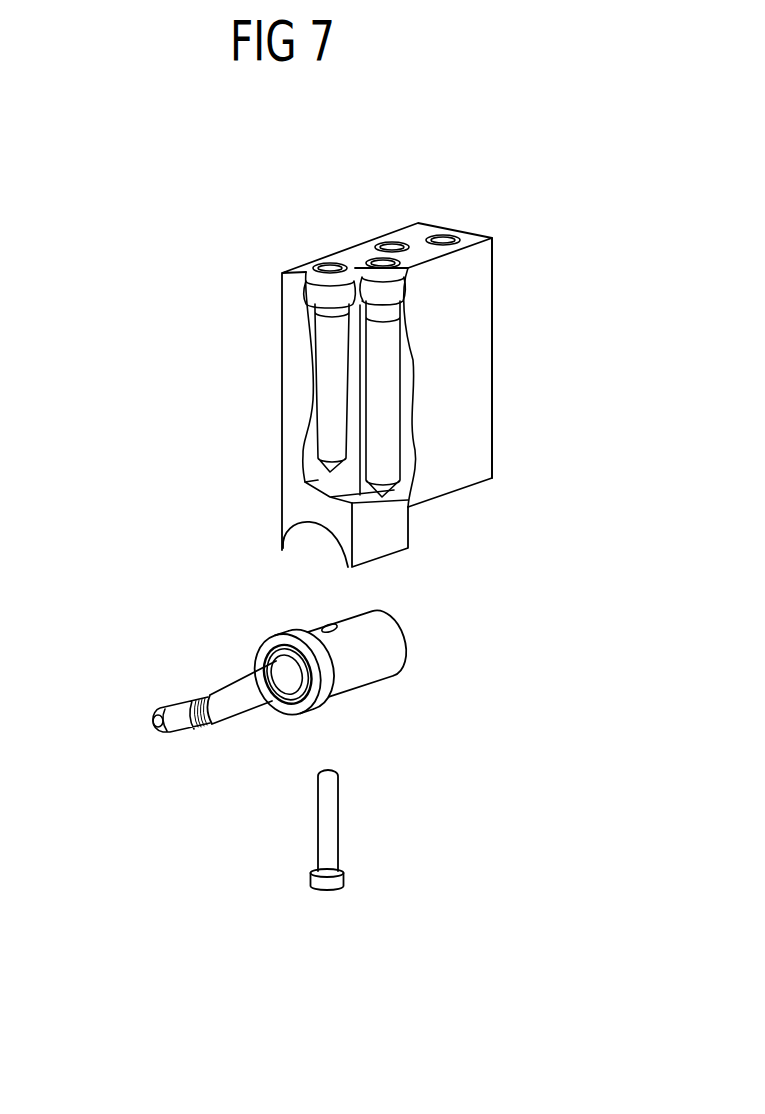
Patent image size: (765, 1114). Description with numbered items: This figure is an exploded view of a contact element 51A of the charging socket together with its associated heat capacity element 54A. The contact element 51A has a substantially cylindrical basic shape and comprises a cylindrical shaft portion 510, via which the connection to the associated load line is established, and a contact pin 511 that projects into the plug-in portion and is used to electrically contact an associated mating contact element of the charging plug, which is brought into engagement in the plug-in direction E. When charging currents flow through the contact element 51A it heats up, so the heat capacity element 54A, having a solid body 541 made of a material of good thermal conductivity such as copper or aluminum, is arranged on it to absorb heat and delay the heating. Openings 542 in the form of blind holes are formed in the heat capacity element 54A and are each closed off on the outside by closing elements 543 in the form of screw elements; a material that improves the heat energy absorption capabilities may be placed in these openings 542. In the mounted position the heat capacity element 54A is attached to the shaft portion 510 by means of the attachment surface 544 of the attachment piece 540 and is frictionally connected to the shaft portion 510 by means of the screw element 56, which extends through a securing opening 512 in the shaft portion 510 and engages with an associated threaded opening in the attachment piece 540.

The heat capacity element 54A is at (478, 328).
The solid body 541 is at (475, 417).
The attachment piece 540 is at (378, 543).
The attachment surface 544 is at (315, 550).
The openings 542 is at (382, 407).
The closing elements 543 is at (436, 239).
The shaft portion 510 is at (360, 670).
The securing opening 512 is at (330, 627).
The contact pin 511 is at (227, 688).
The contact element 51A is at (217, 742).
The plug-in direction E is at (115, 736).
The screw element 56 is at (337, 845).